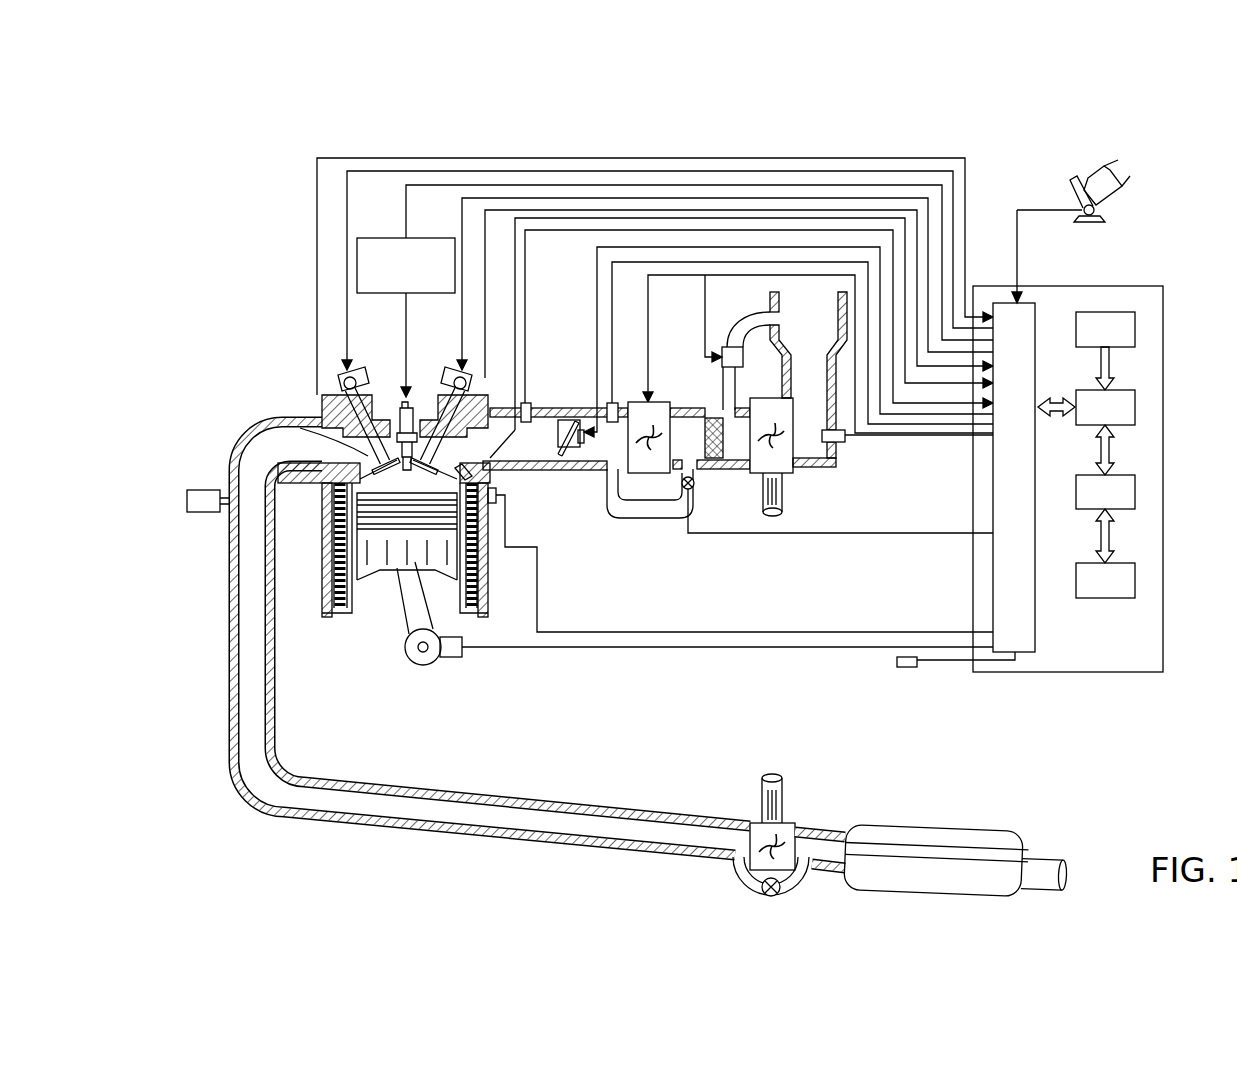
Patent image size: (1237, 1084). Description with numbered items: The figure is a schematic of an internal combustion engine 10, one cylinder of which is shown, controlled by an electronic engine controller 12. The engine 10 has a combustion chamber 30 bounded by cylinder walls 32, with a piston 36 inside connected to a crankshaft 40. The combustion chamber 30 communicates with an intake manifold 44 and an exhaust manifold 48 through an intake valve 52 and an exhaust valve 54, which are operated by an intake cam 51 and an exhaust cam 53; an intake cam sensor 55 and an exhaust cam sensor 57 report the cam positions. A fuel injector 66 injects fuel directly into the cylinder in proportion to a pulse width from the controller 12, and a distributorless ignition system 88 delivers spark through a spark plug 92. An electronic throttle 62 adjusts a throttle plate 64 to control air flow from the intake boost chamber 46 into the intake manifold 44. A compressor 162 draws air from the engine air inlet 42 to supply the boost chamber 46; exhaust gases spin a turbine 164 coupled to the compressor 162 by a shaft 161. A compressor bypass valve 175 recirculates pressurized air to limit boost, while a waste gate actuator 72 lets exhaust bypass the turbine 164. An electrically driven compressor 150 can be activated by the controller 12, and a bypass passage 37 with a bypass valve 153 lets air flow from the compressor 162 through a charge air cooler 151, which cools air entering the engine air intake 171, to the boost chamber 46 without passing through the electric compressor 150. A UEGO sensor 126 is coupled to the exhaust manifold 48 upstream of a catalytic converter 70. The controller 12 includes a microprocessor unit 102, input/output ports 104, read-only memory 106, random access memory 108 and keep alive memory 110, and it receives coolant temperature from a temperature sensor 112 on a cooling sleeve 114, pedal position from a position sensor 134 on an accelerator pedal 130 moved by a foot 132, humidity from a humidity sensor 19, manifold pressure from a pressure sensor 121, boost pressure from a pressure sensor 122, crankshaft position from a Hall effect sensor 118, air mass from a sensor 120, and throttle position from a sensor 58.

The internal combustion engine 10 is at (264, 352).
The electronic engine controller 12 is at (1163, 287).
The humidity sensor 19 is at (905, 667).
The combustion chamber 30 is at (405, 480).
The cylinder walls 32 is at (340, 612).
The piston 36 is at (392, 562).
The electrically driven compressor bypass passage 37 is at (640, 518).
The crankshaft 40 is at (412, 660).
The engine air inlet 42 is at (796, 308).
The intake manifold 44 is at (519, 454).
The intake boost chamber 46 is at (597, 454).
The exhaust manifold 48 is at (281, 458).
The intake cam 51 is at (456, 372).
The intake valve 52 is at (452, 461).
The exhaust cam 53 is at (352, 372).
The exhaust valve 54 is at (364, 455).
The intake cam sensor 55 is at (465, 388).
The exhaust cam sensor 57 is at (343, 388).
The throttle position sensor 58 is at (582, 430).
The electronic throttle 62 is at (566, 424).
The throttle plate 64 is at (566, 418).
The fuel injector 66 is at (466, 480).
The catalytic converter 70 is at (845, 880).
The waste gate actuator 72 is at (762, 886).
The distributorless ignition system 88 is at (370, 240).
The spark plug 92 is at (409, 400).
The microprocessor unit 102 is at (1137, 406).
The input/output ports 104 is at (1038, 310).
The read-only memory 106 is at (1137, 318).
The random access memory 108 is at (1137, 488).
The keep alive memory 110 is at (1137, 575).
The temperature sensor 112 is at (494, 503).
The cooling sleeve 114 is at (486, 578).
The Hall effect sensor 118 is at (450, 657).
The air mass sensor 120 is at (844, 439).
The pressure sensor 121 is at (526, 400).
The pressure sensor 122 is at (614, 403).
The Universal Exhaust Gas Oxygen sensor 126 is at (187, 496).
The accelerator pedal 130 is at (1072, 182).
The foot 132 is at (1122, 182).
The position sensor 134 is at (1105, 212).
The electrically driven compressor 150 is at (645, 402).
The charge air cooler 151 is at (713, 418).
The electrically driven compressor bypass valve 153 is at (682, 483).
The shaft 161 is at (784, 490).
The compressor 162 is at (770, 398).
The turbine 164 is at (757, 823).
The engine air intake 171 is at (846, 481).
The compressor bypass valve 175 is at (726, 347).